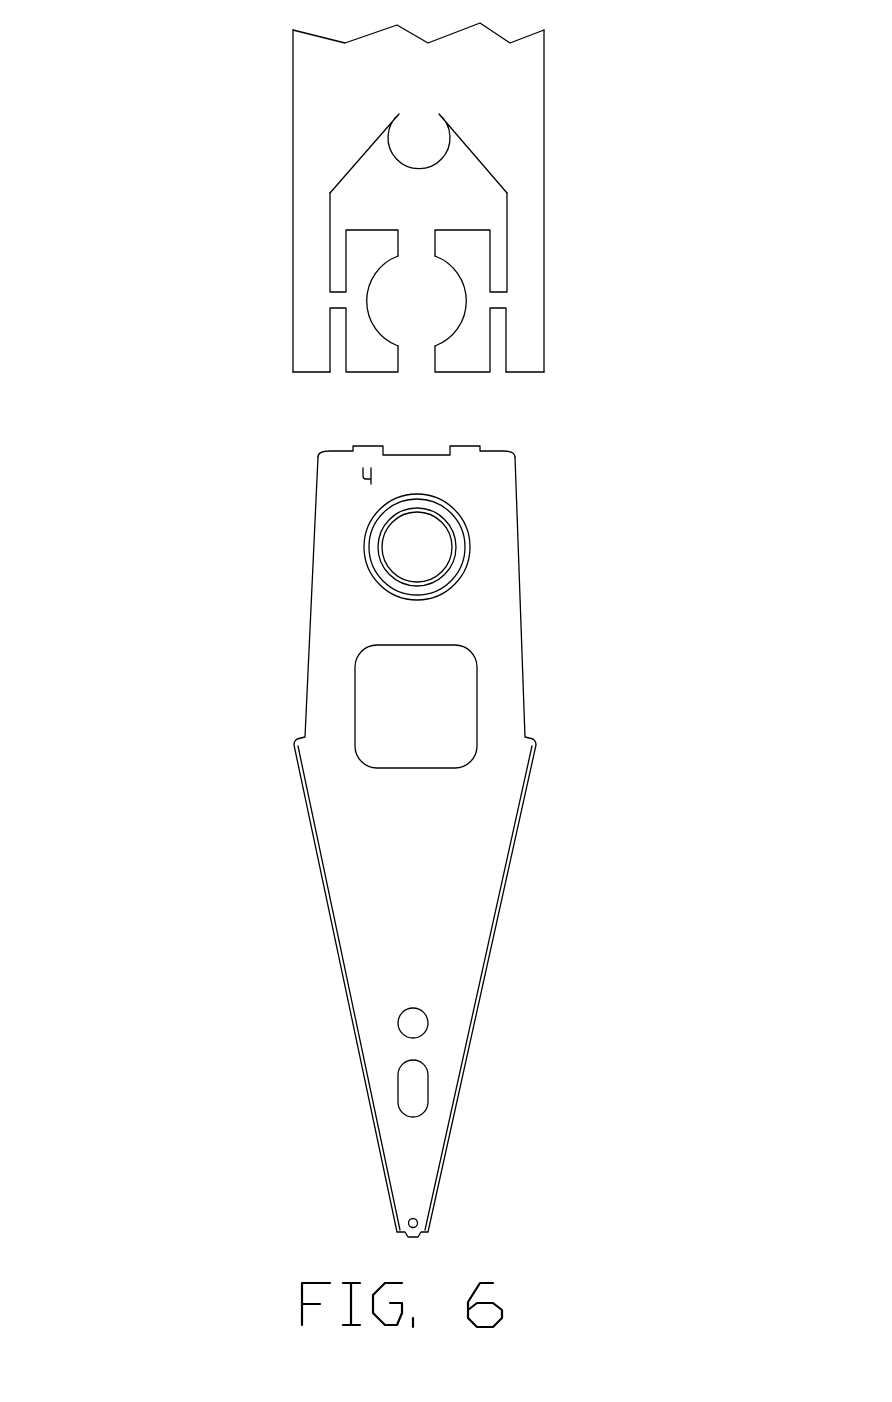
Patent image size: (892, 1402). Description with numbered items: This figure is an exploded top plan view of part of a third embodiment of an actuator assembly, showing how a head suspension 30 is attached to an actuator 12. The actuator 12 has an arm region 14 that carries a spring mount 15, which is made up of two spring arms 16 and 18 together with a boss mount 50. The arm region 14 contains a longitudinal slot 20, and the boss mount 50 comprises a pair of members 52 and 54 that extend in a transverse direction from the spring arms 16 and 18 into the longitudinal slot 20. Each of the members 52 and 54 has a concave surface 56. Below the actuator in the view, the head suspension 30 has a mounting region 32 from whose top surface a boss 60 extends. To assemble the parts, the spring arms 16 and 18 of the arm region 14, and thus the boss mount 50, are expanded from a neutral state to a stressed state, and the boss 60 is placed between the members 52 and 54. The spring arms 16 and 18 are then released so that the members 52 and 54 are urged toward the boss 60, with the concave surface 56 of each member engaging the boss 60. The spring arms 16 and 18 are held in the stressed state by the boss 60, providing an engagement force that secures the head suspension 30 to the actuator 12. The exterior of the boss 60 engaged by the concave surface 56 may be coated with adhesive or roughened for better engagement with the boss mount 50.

The actuator 12 is at (522, 68).
The arm region 14 is at (313, 85).
The spring mount 15 is at (396, 242).
The spring arm 16 is at (300, 365).
The spring arm 18 is at (540, 353).
The longitudinal slot 20 is at (415, 188).
The boss mount 50 is at (473, 170).
The member 52 is at (357, 362).
The member 54 is at (465, 363).
The concave surface 56 is at (464, 287).
The head suspension 30 is at (405, 841).
The mounting region 32 is at (508, 562).
The boss 60 is at (373, 553).